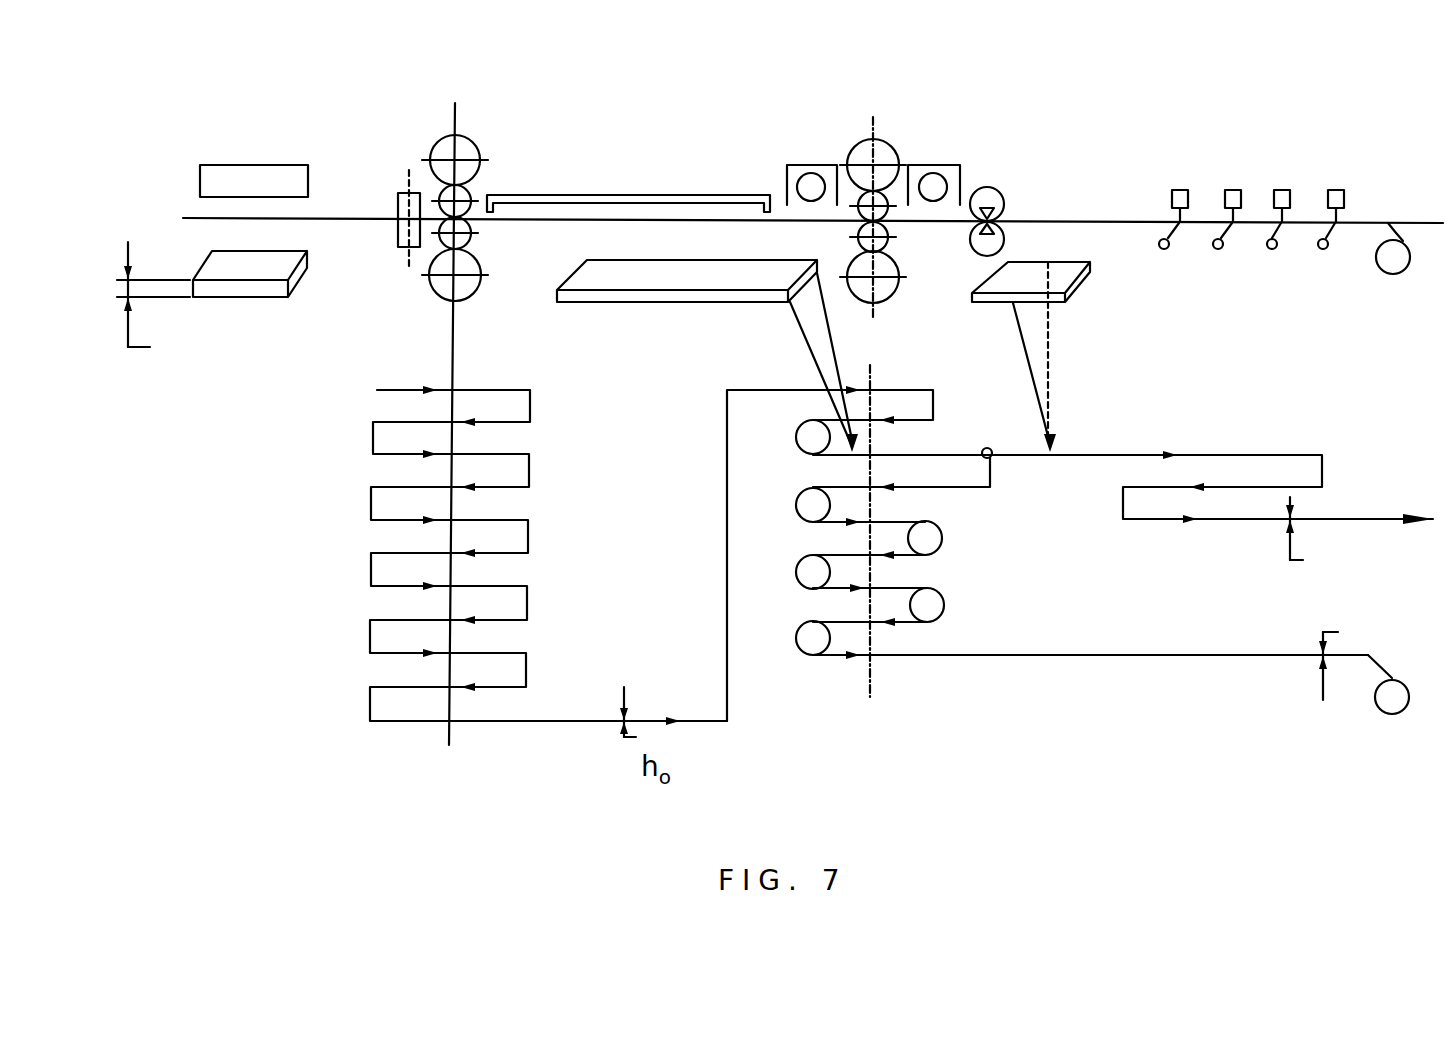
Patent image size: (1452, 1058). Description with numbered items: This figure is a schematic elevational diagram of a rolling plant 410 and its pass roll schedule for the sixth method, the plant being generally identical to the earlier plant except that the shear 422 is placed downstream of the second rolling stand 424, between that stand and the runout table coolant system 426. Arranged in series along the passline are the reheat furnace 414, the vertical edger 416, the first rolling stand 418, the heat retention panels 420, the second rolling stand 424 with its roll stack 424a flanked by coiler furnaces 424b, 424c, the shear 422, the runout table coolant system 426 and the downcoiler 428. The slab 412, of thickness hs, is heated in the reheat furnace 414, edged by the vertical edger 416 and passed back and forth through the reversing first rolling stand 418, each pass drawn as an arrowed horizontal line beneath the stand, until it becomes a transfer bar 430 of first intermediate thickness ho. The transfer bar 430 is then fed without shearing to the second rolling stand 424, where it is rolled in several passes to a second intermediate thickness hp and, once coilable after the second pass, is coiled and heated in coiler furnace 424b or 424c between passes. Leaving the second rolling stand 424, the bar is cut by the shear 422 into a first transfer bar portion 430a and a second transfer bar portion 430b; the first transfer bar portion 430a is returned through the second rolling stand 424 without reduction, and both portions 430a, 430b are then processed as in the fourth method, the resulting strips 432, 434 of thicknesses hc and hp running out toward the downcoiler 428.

The rolling plant 410 is at (722, 108).
The slab 412 is at (247, 290).
The reheat furnace 414 is at (262, 175).
The vertical edger 416 is at (400, 203).
The first rolling stand 418 is at (468, 148).
The heat retention panels 420 is at (608, 175).
The shear 422 is at (990, 194).
The second rolling stand 424 is at (866, 194).
The second rolling stand rolls 424a is at (882, 152).
The coiler furnace 424b is at (803, 180).
The coiler furnace 424c is at (933, 183).
The runout table coolant system 426 is at (1260, 182).
The downcoiler 428 is at (1395, 735).
The transfer bar 430 is at (963, 295).
The first transfer bar portion 430a is at (680, 255).
The second transfer bar portion 430b is at (1022, 272).
The strip of thickness hc 432 is at (1073, 658).
The strip of thickness hp 434 is at (1333, 519).